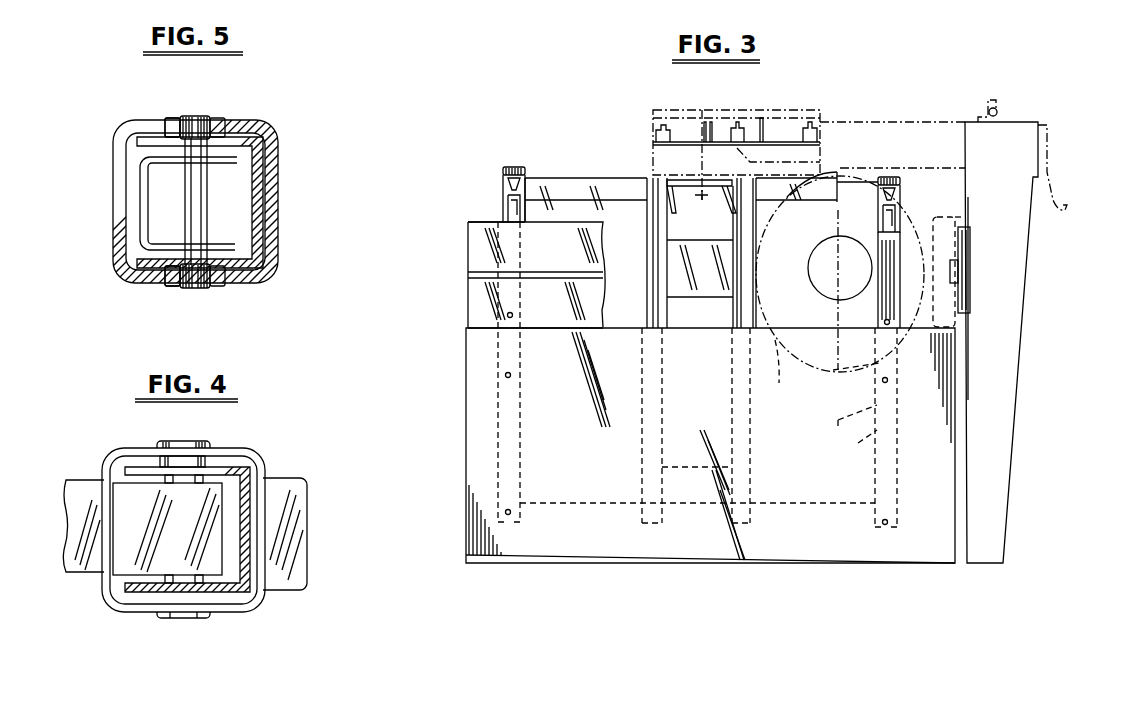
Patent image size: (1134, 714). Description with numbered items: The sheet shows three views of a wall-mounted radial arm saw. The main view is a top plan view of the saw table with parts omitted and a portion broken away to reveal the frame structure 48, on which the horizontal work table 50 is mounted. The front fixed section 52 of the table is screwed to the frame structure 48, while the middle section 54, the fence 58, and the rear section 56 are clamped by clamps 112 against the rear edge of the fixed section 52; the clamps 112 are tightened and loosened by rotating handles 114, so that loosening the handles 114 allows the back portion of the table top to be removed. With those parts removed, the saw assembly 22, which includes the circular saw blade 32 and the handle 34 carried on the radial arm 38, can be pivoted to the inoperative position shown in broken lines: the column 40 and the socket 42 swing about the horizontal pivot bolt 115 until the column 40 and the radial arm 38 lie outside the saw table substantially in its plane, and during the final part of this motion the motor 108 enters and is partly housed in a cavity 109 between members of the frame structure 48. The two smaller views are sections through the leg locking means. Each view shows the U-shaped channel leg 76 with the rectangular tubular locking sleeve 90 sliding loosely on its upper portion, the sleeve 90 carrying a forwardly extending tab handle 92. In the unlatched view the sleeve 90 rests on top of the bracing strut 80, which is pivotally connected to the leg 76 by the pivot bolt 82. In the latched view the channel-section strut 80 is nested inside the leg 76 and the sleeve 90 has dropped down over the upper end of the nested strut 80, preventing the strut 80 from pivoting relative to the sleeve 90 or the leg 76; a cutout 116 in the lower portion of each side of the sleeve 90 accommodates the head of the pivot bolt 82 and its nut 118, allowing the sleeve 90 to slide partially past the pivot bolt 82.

In FIG. 3, the saw assembly 22 is at (1033, 243).
In FIG. 3, the circular saw blade 32 is at (773, 295).
In FIG. 3, the handle 34 is at (855, 420).
In FIG. 3, the radial arm 38 is at (1018, 405).
In FIG. 3, the column 40 is at (890, 143).
In FIG. 3, the socket 42 is at (783, 108).
In FIG. 3, the frame structure 48 is at (600, 166).
In FIG. 3, the work table 50 is at (466, 378).
In FIG. 3, the front fixed section 52 is at (603, 537).
In FIG. 3, the middle section 54 is at (480, 307).
In FIG. 3, the rear section 56 is at (482, 237).
In FIG. 3, the fence 58 is at (475, 275).
In FIG. 5, the foldaway leg 76 is at (140, 142).
In FIG. 4, the foldaway leg 76 is at (140, 593).
In FIG. 5, the bracing strut 80 is at (133, 208).
In FIG. 4, the bracing strut 80 is at (85, 563).
In FIG. 5, the pivot bolt 82 is at (220, 287).
In FIG. 4, the pivot bolt 82 is at (198, 617).
In FIG. 5, the locking sleeve 90 is at (278, 193).
In FIG. 4, the locking sleeve 90 is at (250, 456).
In FIG. 4, the tab handle 92 is at (297, 557).
In FIG. 3, the motor 108 is at (840, 274).
In FIG. 3, the cavity 109 is at (752, 320).
In FIG. 3, the clamp 112 is at (503, 210).
In FIG. 3, the handle 114 is at (513, 167).
In FIG. 3, the pivot bolt 115 is at (713, 203).
In FIG. 5, the cutout 116 is at (167, 127).
In FIG. 5, the nut 118 is at (227, 120).
In FIG. 4, the nut 118 is at (167, 442).